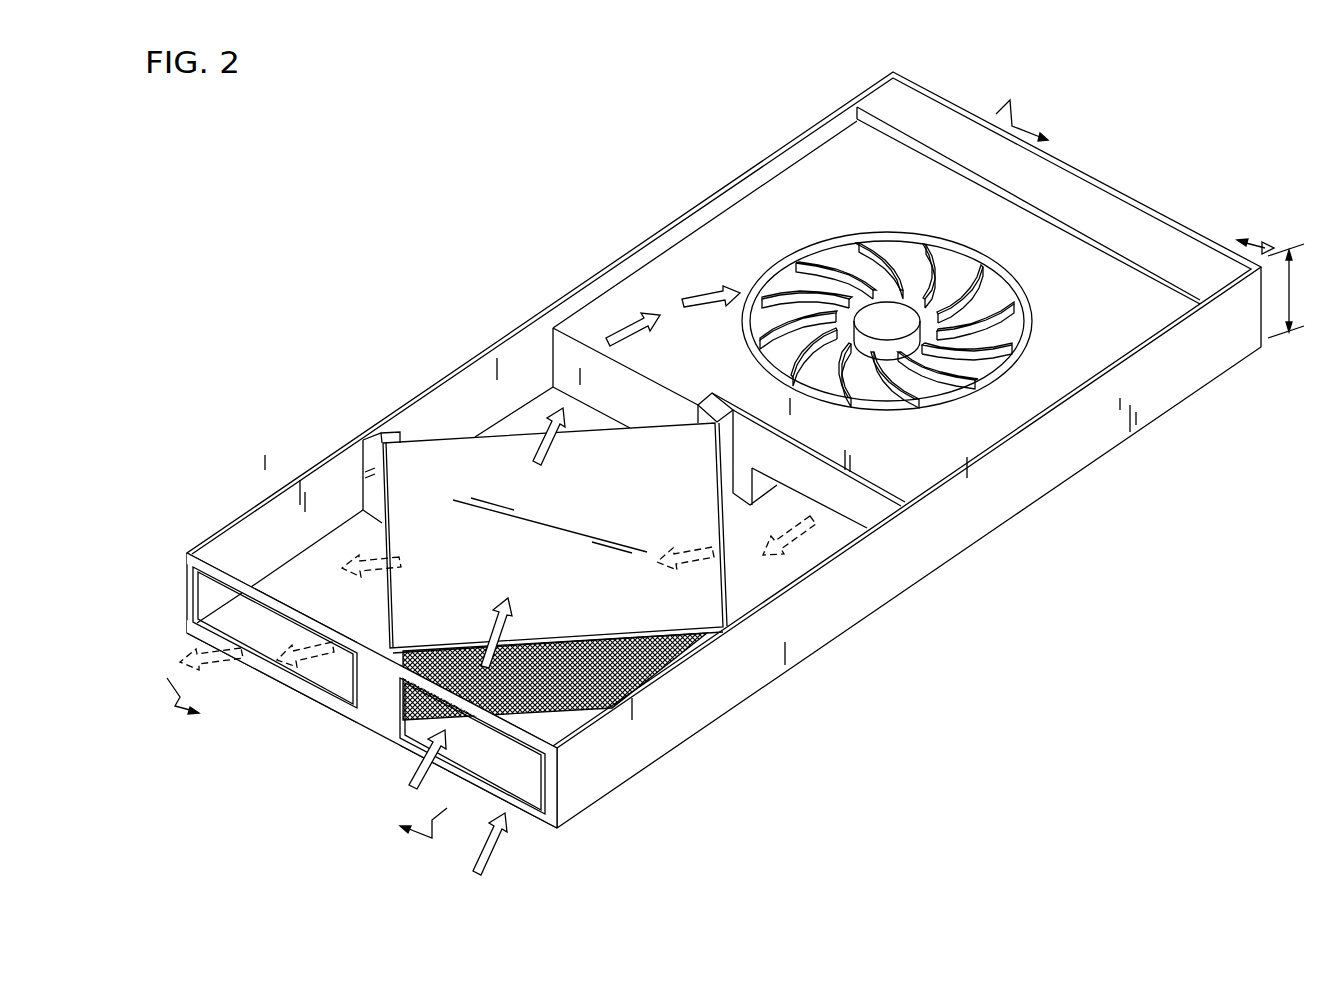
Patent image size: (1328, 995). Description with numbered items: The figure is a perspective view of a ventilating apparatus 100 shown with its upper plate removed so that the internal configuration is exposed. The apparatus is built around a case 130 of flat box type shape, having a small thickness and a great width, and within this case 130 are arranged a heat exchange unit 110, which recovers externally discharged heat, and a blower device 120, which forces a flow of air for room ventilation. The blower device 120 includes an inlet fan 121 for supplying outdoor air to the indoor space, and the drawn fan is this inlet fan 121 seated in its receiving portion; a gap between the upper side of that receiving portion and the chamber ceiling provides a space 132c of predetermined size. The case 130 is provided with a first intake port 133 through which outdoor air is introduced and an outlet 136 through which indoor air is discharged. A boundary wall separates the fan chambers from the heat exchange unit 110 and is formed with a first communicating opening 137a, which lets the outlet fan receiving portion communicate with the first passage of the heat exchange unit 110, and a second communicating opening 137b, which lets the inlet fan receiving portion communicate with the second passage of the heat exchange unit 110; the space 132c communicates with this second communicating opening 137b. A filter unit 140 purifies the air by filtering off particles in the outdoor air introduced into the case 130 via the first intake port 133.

The ventilating apparatus 100 is at (351, 192).
The heat exchange unit 110 is at (520, 448).
The blower device 120 is at (936, 225).
The inlet fan 121 is at (998, 293).
The space 132c is at (917, 242).
The case 130 is at (862, 635).
The first intake port 133 is at (532, 780).
The outlet 136 is at (327, 677).
The first communicating opening 137a is at (839, 520).
The second communicating opening 137b is at (670, 378).
The filter unit 140 is at (673, 667).